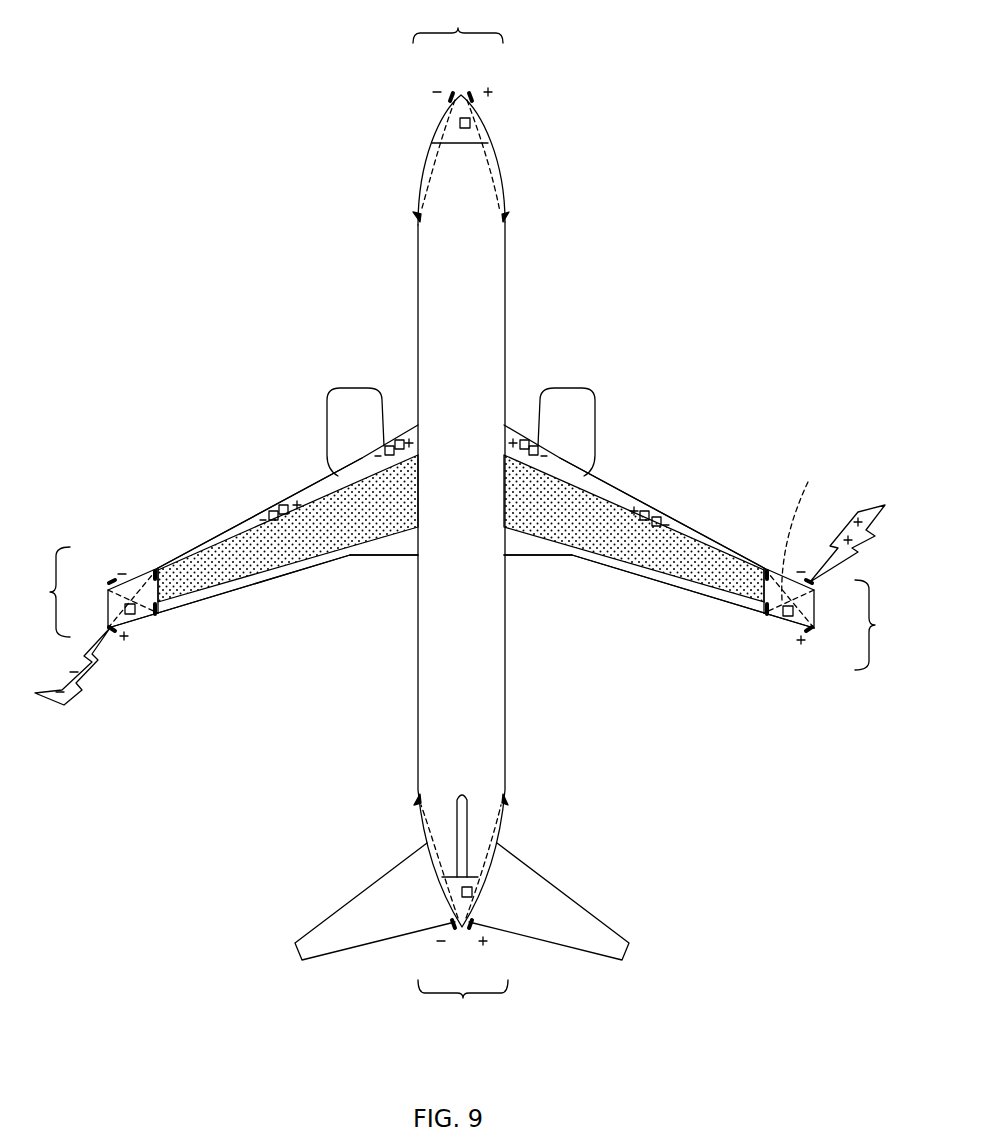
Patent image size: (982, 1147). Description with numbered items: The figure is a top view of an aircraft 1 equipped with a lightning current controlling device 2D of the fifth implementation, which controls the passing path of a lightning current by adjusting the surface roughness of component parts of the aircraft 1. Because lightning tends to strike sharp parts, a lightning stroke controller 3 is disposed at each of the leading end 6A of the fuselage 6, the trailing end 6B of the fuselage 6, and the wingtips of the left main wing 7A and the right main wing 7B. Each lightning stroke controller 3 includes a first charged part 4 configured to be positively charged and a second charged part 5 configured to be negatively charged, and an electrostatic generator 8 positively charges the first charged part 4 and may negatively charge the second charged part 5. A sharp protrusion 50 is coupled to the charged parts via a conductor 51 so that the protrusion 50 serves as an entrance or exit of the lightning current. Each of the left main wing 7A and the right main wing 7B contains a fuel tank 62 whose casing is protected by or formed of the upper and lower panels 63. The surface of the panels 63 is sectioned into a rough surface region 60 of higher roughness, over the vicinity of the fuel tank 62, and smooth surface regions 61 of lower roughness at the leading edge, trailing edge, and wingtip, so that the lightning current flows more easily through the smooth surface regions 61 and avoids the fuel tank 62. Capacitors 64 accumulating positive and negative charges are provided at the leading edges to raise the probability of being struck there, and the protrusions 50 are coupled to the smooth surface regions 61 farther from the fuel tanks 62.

The aircraft 1 is at (195, 175).
The lightning stroke controller 3 is at (460, 518).
The first charged part 4 is at (470, 92).
The second charged part 5 is at (452, 92).
The fuselage 6 is at (415, 305).
The leading end of the fuselage 6A is at (432, 135).
The trailing end of the fuselage 6B is at (440, 898).
The left main wing 7A is at (265, 505).
The right main wing 7B is at (688, 512).
The electrostatic generator 8 is at (470, 123).
The protrusion 50 is at (155, 573).
The conductor 51 is at (497, 172).
The rough surface region 60 is at (583, 513).
The smooth surface region 61 is at (625, 505).
The fuel tank 62 is at (365, 557).
The upper and lower panels 63 is at (258, 597).
The capacitor 64 is at (390, 445).
The lightning current controlling device 2D is at (808, 652).